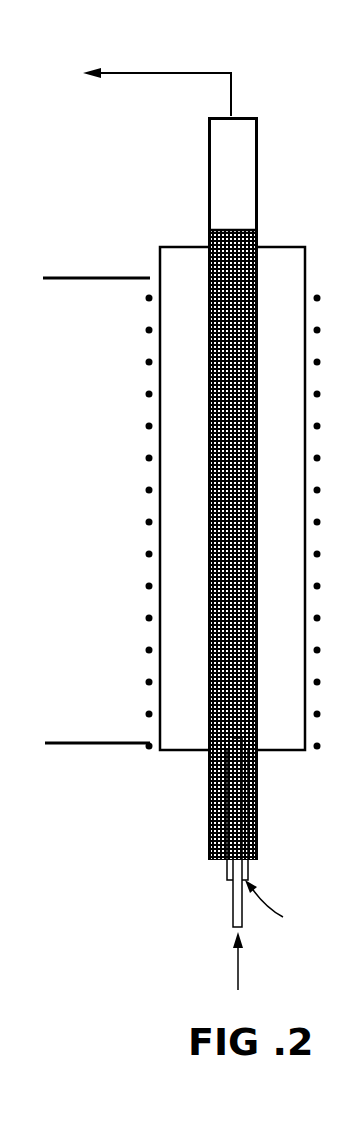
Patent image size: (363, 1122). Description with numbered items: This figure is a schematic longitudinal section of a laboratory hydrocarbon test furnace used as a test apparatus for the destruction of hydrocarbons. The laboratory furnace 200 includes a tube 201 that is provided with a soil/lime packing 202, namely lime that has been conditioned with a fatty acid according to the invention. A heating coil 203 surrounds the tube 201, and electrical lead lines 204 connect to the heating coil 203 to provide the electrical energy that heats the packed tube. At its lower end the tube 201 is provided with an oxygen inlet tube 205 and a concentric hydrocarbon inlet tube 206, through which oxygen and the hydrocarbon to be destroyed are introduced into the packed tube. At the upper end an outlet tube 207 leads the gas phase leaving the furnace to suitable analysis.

The laboratory furnace 200 is at (190, 605).
The tube 201 is at (208, 578).
The soil/lime packing 202 is at (212, 452).
The heating coil 203 is at (172, 358).
The electrical lead lines 204 is at (112, 278).
The oxygen inlet tube 205 is at (232, 875).
The hydrocarbon inlet tube 206 is at (208, 796).
The outlet tube 207 is at (187, 73).